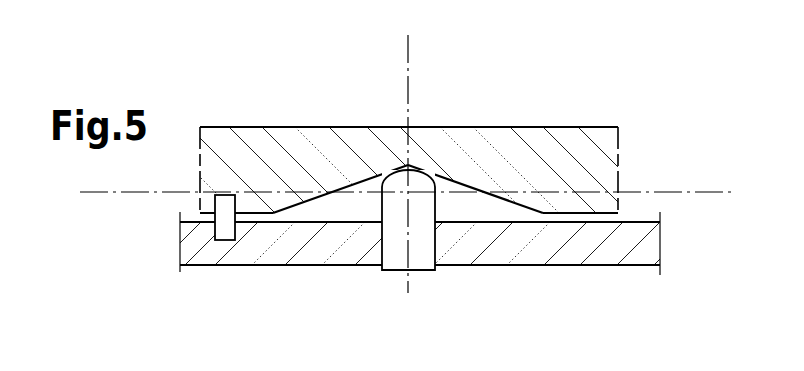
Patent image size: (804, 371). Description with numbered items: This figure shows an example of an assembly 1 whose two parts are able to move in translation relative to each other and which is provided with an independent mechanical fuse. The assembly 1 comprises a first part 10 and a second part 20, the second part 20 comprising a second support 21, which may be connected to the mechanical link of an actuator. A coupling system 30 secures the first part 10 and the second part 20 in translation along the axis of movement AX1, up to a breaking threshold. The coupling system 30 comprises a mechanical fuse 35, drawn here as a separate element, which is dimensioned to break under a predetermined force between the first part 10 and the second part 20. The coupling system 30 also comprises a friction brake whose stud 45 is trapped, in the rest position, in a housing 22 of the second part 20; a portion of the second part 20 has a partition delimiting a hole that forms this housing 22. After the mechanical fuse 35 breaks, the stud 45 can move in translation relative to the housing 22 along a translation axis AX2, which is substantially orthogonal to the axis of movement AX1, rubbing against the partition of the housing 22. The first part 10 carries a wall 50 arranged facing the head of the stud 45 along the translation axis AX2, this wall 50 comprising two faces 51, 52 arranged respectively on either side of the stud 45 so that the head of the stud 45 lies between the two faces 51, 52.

The assembly 1 is at (400, 178).
The first part 10 is at (407, 130).
The wall 50 is at (430, 143).
The first face 51 is at (355, 182).
The second face 52 is at (515, 200).
The coupling system 30 is at (381, 257).
The second part 20 is at (427, 252).
The second support 21 is at (610, 257).
The housing 22 is at (403, 257).
The stud 45 is at (423, 245).
The mechanical fuse 35 is at (222, 228).
The axis of movement AX1 is at (697, 190).
The translation axis AX2 is at (407, 82).